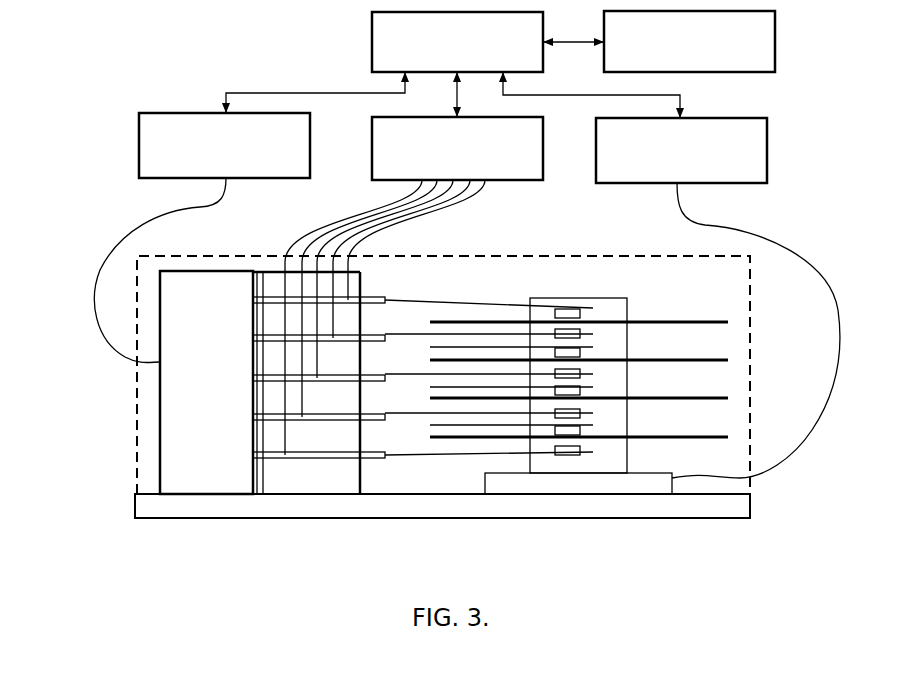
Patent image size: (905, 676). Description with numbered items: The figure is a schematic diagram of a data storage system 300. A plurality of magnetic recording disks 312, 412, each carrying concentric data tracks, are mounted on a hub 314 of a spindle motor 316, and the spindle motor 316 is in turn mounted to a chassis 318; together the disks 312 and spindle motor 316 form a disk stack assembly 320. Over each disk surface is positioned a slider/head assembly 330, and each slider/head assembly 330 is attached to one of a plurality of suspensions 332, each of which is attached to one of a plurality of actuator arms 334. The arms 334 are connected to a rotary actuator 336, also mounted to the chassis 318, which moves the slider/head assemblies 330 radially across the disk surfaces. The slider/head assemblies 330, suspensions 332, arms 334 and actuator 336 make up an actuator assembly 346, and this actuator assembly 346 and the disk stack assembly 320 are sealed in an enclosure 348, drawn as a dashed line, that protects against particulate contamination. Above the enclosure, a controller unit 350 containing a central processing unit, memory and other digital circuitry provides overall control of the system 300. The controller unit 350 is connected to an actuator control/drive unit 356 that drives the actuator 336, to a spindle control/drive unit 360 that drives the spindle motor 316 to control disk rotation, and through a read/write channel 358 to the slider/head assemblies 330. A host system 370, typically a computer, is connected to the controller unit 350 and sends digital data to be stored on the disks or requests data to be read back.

The data storage system 300 is at (172, 539).
The magnetic recording disk 312 is at (700, 323).
The disc 412 is at (700, 402).
The hub 314 is at (612, 310).
The spindle motor 316 is at (601, 478).
The chassis 318 is at (750, 513).
The disk stack assembly 320 is at (541, 478).
The slider/head assembly 330 is at (550, 336).
The suspension 332 is at (445, 377).
The actuator arm 334 is at (368, 297).
The rotary actuator 336 is at (213, 378).
The actuator assembly 346 is at (183, 458).
The enclosure 348 is at (137, 408).
The controller unit 350 is at (372, 42).
The actuator control/drive unit 356 is at (139, 150).
The read/write channel 358 is at (372, 152).
The spindle control/drive unit 360 is at (767, 150).
The host system 370 is at (775, 42).